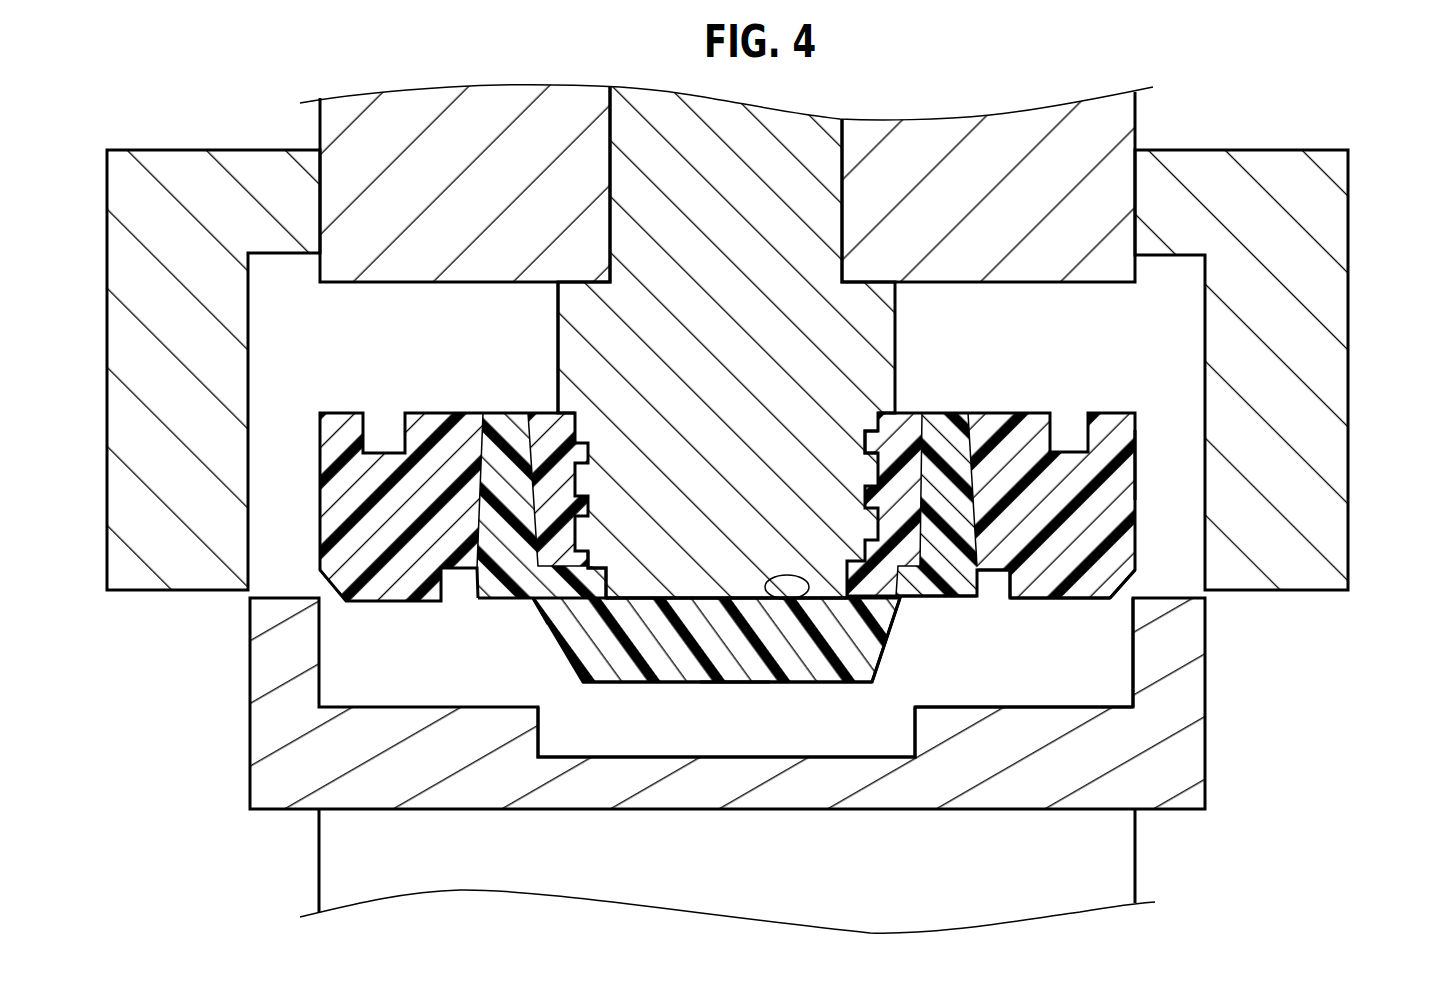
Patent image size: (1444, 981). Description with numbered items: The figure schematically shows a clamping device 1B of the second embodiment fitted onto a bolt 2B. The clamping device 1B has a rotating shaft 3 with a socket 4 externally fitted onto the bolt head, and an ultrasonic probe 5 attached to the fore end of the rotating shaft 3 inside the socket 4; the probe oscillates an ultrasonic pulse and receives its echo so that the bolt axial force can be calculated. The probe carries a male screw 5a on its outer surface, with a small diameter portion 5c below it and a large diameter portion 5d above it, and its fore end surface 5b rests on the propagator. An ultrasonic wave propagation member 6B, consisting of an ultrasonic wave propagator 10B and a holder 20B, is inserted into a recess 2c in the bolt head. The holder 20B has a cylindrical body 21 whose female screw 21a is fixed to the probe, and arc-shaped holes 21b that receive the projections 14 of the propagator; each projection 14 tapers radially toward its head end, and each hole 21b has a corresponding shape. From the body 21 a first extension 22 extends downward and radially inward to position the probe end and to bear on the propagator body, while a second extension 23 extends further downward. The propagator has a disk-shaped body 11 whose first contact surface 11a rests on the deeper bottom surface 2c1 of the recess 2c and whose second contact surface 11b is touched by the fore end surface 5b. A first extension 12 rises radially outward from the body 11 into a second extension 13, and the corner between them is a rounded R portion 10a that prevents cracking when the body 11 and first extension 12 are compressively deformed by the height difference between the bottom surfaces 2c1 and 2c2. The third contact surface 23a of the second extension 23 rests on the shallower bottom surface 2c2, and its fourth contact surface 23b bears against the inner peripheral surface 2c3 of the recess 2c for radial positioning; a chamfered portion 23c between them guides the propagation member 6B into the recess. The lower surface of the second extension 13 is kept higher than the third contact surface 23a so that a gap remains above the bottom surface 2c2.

The clamping device 1B is at (1363, 133).
The bolt 2B is at (1223, 830).
The rotating shaft 3 is at (1118, 120).
The socket 4 is at (1327, 378).
The ultrasonic probe 5 is at (862, 325).
The male screw 5a is at (882, 465).
The fore end surface 5b is at (690, 600).
The small diameter portion 5c is at (574, 620).
The large diameter portion 5d is at (560, 335).
The ultrasonic wave propagation member 6B is at (1140, 384).
The holder 20B is at (342, 522).
The body 21 is at (1125, 462).
The female screw 21a is at (508, 470).
The hole 21b is at (492, 445).
The ultrasonic wave propagator 10B is at (573, 662).
The R portion 10a is at (538, 602).
The body 11 is at (843, 677).
The first contact surface 11a is at (733, 683).
The second contact surface 11b is at (795, 599).
The first extension 12 is at (915, 580).
The second extension 13 is at (958, 580).
The projection 14 is at (948, 430).
The first extension 22 is at (872, 663).
The second extension 23 is at (1068, 600).
The third contact surface 23a is at (1037, 600).
The fourth contact surface 23b is at (1135, 565).
The chamfered portion 23c is at (1118, 594).
The recess 2c is at (422, 706).
The bottom surface 2c1 is at (617, 755).
The bottom surface 2c2 is at (977, 706).
The inner peripheral surface 2c3 is at (1133, 655).